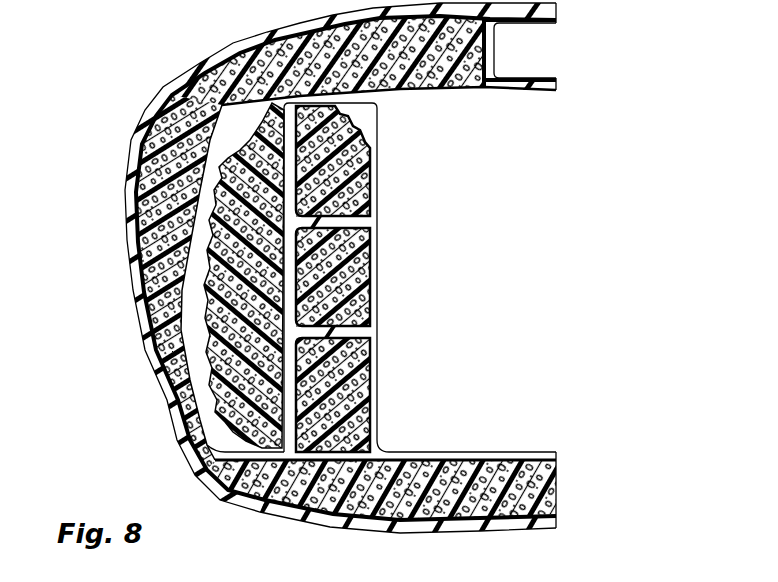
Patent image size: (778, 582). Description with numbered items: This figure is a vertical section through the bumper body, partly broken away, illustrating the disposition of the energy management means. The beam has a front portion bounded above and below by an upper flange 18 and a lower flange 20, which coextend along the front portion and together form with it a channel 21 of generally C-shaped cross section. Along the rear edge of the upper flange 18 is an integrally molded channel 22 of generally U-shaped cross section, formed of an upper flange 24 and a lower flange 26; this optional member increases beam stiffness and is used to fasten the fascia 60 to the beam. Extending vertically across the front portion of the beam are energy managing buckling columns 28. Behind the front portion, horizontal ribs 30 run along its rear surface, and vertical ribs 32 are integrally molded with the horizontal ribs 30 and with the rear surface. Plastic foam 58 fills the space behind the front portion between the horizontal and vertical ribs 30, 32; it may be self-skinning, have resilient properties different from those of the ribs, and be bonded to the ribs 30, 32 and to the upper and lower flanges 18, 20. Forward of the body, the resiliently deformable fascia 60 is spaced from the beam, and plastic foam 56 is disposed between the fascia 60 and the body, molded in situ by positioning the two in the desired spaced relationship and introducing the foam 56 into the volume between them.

The upper flange 18 is at (489, 68).
The lower flange 20 is at (494, 452).
The channel 21 is at (490, 290).
The channel 22 is at (532, 50).
The upper flange 24 is at (548, 27).
The lower flange 26 is at (548, 72).
The buckling columns 28 is at (237, 121).
The horizontal ribs 30 is at (371, 218).
The vertical ribs 32 is at (377, 126).
The plastic foam 56 is at (200, 58).
The plastic foam 58 is at (372, 256).
The fascia member 60 is at (180, 440).